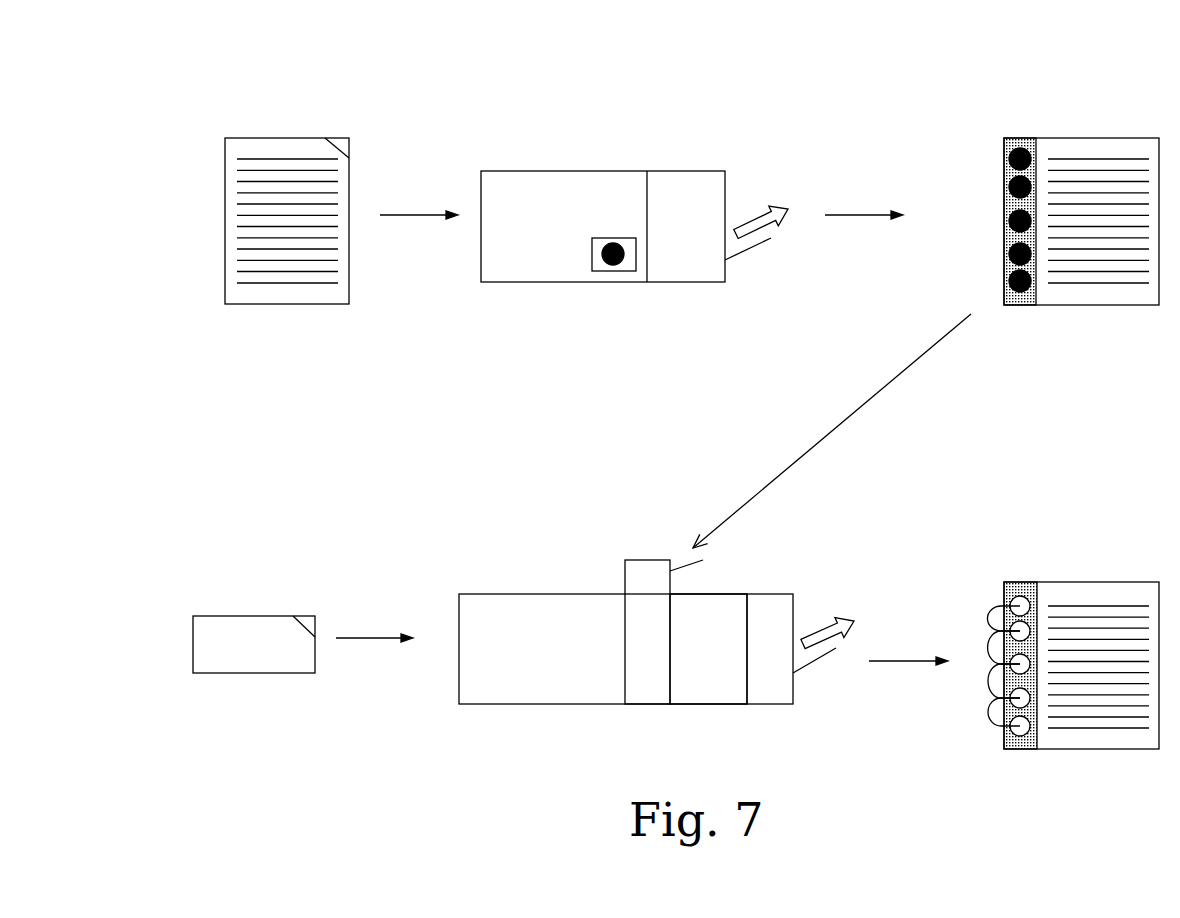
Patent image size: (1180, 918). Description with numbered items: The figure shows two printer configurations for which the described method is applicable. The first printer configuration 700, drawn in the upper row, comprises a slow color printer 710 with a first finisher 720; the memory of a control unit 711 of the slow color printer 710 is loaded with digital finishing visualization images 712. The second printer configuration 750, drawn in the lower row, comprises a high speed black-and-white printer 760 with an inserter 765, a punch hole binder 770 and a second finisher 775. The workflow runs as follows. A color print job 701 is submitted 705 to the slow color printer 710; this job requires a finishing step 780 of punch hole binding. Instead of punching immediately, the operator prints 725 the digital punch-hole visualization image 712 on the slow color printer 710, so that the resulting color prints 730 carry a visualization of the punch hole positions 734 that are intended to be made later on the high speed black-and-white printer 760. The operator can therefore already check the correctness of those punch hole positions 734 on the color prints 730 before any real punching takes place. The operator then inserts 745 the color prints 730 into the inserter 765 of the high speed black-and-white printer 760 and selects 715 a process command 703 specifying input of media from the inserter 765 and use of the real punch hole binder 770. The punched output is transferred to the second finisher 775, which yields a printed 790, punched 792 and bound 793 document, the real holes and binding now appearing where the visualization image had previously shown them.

The first printer configuration 700 is at (524, 317).
The color print job 701 is at (252, 137).
The process command 703 is at (205, 615).
The submission of the color print job 705 is at (418, 214).
The slow color printer 710 is at (620, 170).
The control unit 711 is at (597, 237).
The digital finishing visualization image 712 is at (623, 258).
The selection of the process command 715 is at (372, 637).
The first finisher 720 is at (698, 170).
The printing of the visualization image 725 is at (863, 214).
The color prints 730 is at (1106, 137).
The punch hole positions 734 is at (1023, 292).
The insertion of the color prints 745 is at (841, 425).
The second printer configuration 750 is at (502, 727).
The high speed black-and-white printer 760 is at (553, 593).
The inserter 765 is at (640, 559).
The punch hole binder 770 is at (692, 683).
The second finisher 775 is at (770, 683).
The finishing step 780 is at (906, 660).
The printed document 790 is at (1097, 581).
The punched holes 792 is at (1025, 735).
The binding 793 is at (985, 607).